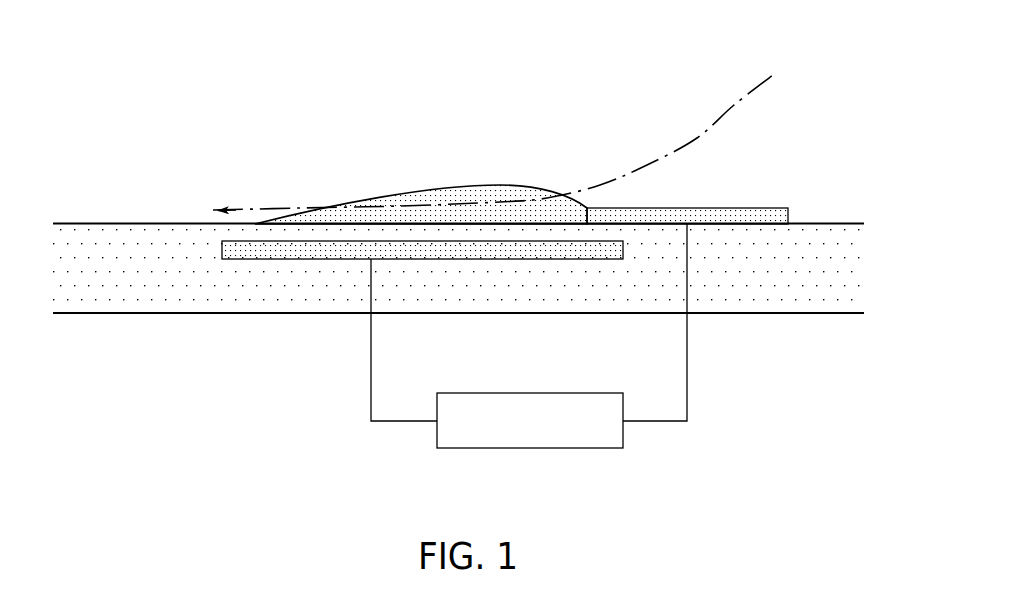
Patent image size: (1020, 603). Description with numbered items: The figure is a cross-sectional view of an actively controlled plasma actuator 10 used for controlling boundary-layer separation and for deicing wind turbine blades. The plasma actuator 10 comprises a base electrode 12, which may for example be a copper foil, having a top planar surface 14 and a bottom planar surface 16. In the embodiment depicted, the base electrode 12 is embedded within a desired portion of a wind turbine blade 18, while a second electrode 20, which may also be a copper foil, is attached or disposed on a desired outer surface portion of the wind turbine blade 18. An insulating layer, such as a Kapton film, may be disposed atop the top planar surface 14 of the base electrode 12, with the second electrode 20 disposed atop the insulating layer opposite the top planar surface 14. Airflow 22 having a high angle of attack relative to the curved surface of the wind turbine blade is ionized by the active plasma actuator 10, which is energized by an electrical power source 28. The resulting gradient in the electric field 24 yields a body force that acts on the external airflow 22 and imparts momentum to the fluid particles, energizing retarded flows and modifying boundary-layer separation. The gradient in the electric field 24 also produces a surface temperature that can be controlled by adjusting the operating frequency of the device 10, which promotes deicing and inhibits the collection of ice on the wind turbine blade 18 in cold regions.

The plasma actuator 10 is at (160, 61).
The base electrode 12 is at (287, 263).
The top planar surface 14 is at (250, 241).
The bottom planar surface 16 is at (238, 260).
The wind turbine blade 18 is at (93, 221).
The second electrode 20 is at (739, 206).
The airflow 22 is at (697, 139).
The electric field 24 is at (486, 184).
The electrical power source 28 is at (623, 432).